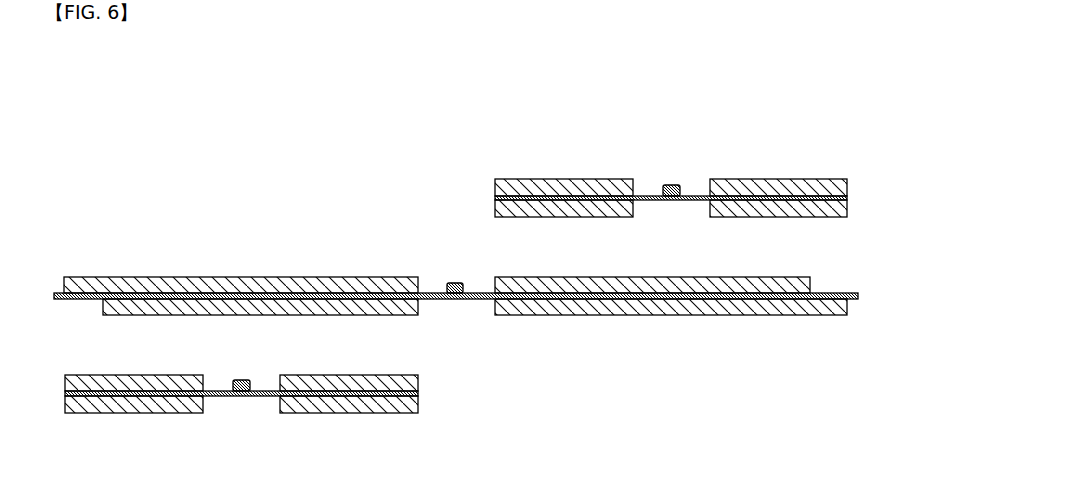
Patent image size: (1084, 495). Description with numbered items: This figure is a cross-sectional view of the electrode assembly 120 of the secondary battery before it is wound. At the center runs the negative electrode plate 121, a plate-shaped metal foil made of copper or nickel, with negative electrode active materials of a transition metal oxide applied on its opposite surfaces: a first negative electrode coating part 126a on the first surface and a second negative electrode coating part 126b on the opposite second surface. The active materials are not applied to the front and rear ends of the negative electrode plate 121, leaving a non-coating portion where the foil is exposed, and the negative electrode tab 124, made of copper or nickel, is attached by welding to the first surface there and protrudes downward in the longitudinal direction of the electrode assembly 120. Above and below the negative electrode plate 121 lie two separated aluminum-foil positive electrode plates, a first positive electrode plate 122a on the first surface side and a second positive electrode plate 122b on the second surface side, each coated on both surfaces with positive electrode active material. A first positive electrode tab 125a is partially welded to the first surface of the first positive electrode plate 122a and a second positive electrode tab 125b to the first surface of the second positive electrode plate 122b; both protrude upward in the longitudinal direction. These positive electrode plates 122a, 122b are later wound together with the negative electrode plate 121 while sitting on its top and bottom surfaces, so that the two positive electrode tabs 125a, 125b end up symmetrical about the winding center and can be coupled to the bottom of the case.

The electrode assembly 120 is at (908, 150).
The negative electrode plate 121 is at (858, 297).
The first positive electrode plate 122a is at (710, 200).
The second positive electrode plate 122b is at (279, 397).
The negative electrode tab 124 is at (457, 283).
The first positive electrode tab 125a is at (671, 185).
The second positive electrode tab 125b is at (240, 380).
The first negative electrode coating part 126a is at (332, 283).
The second negative electrode coating part 126b is at (360, 310).